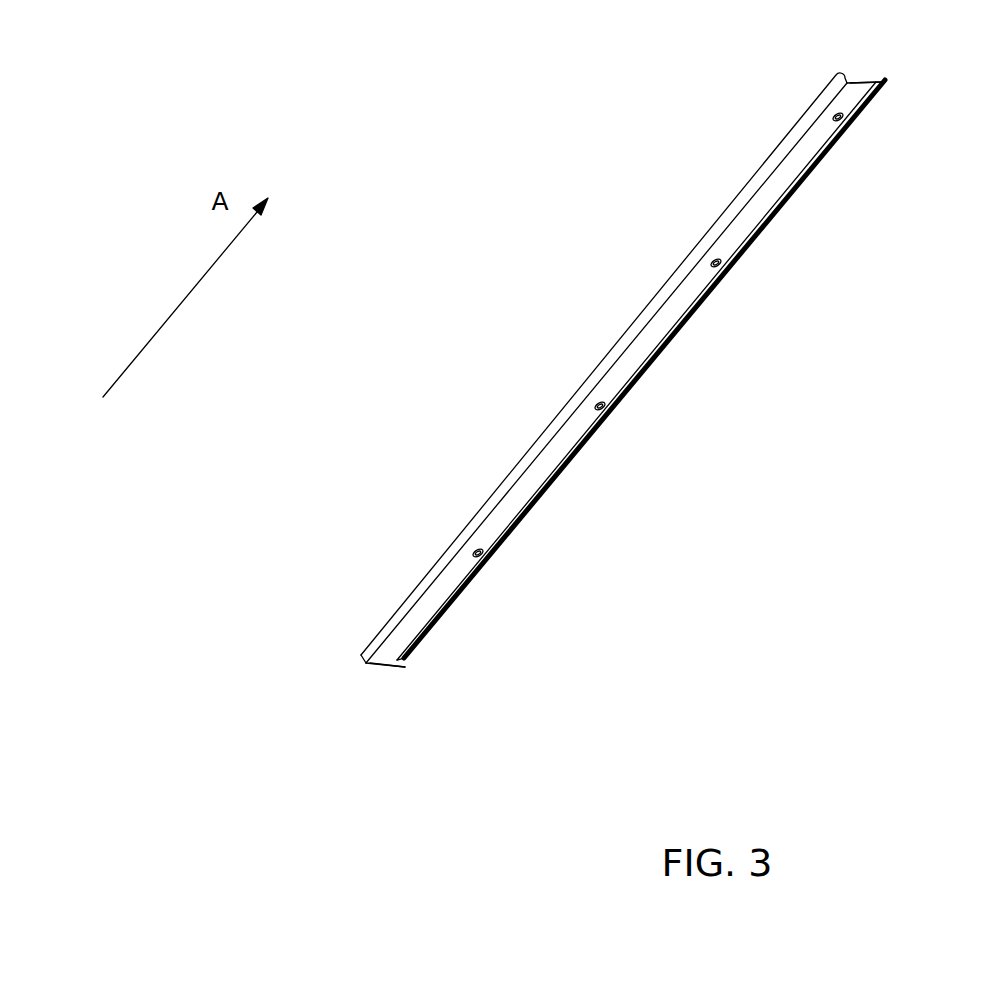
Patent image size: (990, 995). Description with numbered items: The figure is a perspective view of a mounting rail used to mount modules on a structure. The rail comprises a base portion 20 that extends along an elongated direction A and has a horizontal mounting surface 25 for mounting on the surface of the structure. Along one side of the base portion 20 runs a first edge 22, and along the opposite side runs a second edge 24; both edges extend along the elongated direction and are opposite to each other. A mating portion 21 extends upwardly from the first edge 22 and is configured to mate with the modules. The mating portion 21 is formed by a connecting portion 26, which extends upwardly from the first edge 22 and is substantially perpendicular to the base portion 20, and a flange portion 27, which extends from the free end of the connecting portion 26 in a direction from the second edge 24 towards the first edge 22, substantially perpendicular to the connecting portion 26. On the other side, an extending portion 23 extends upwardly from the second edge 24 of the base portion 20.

The base portion 20 is at (645, 379).
The mating portion 21 is at (904, 84).
The first edge 22 is at (405, 668).
The extending portion 23 is at (800, 130).
The second edge 24 is at (366, 666).
The horizontal mounting surface 25 is at (543, 477).
The connecting portion 26 is at (407, 664).
The flange portion 27 is at (443, 607).